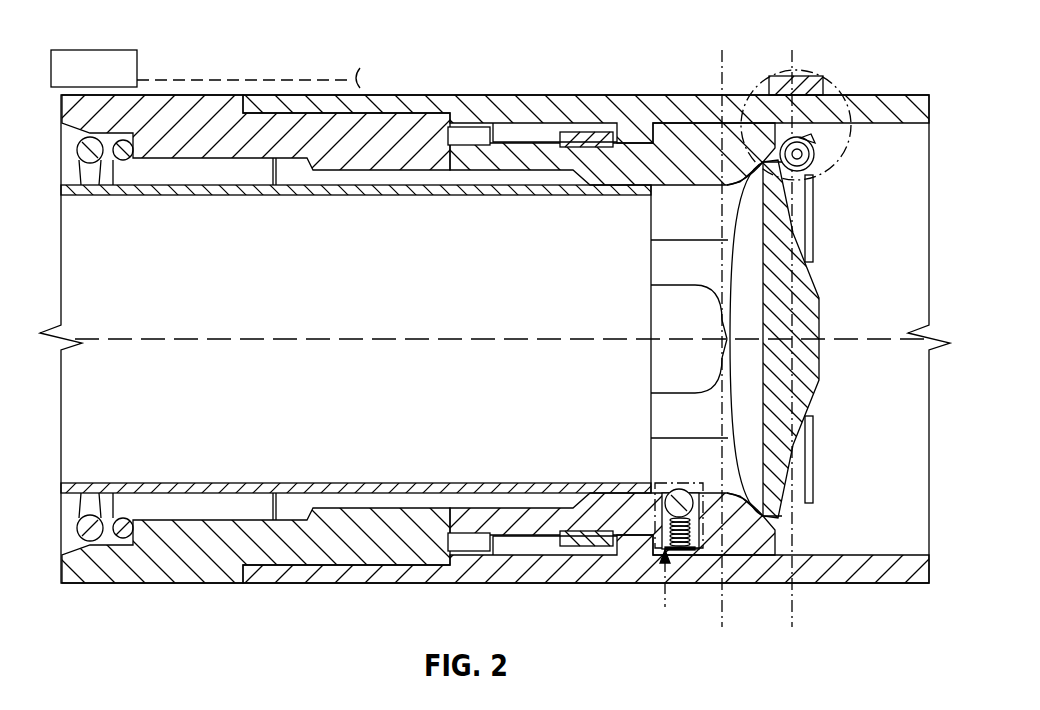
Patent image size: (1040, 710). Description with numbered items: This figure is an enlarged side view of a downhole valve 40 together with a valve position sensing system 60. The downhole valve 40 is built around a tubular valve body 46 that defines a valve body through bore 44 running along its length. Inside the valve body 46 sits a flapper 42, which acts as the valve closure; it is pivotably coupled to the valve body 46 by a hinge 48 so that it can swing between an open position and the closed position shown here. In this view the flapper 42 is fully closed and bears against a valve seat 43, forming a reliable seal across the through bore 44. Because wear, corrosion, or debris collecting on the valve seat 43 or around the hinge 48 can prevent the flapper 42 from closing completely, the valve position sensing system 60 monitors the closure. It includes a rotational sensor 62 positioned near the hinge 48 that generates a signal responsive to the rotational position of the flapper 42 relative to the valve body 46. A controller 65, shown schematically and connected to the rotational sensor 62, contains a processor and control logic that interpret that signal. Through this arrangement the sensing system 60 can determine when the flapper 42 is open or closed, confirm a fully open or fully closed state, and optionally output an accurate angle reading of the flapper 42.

The downhole valve 40 is at (572, 62).
The flapper 42 is at (807, 314).
The valve seat 43 is at (765, 516).
The valve body through bore 44 is at (650, 190).
The tubular valve body 46 is at (458, 165).
The hinge 48 is at (817, 158).
The valve position sensing system 60 is at (830, 78).
The rotational sensor 62 is at (798, 78).
The controller 65 is at (95, 50).